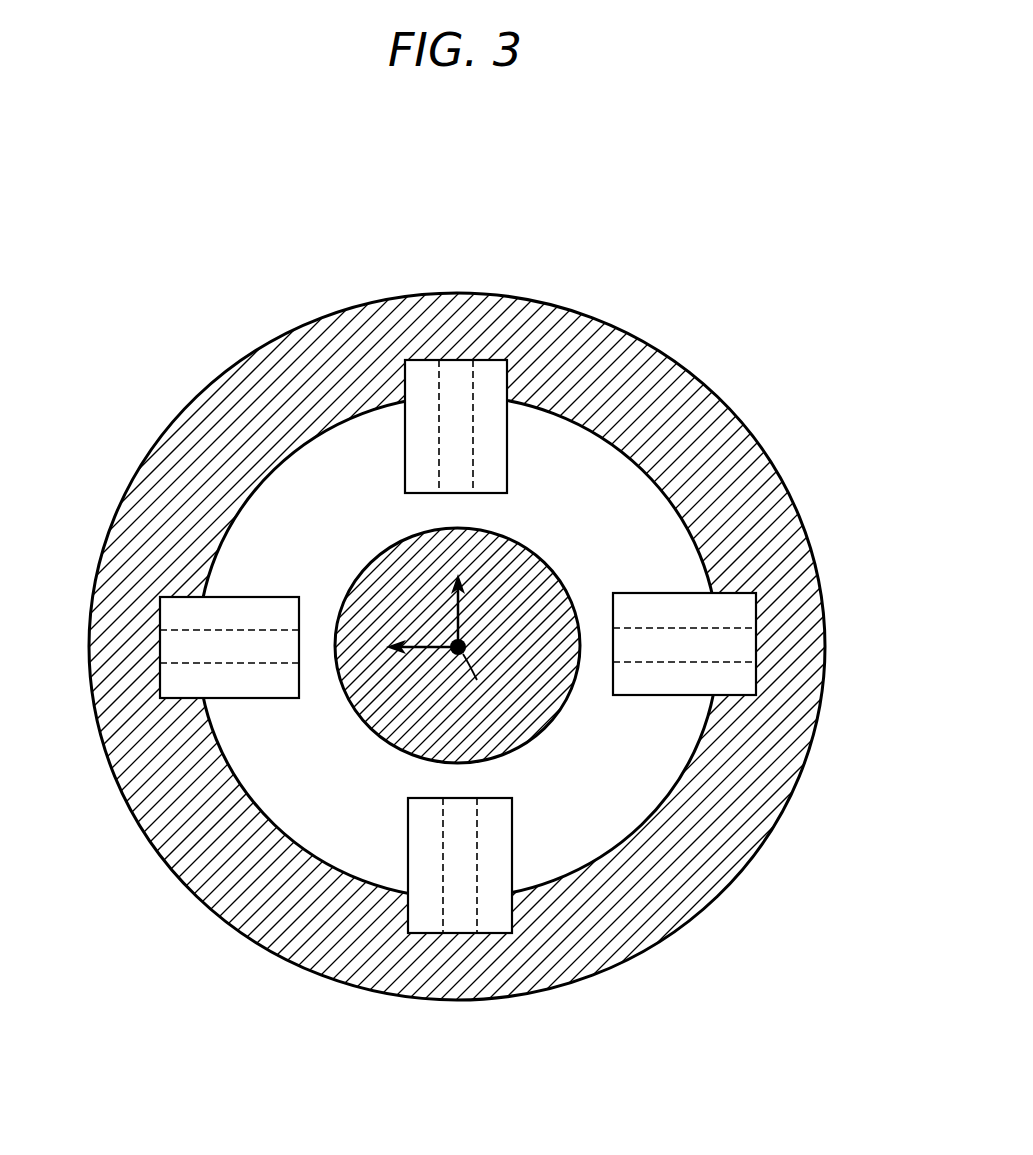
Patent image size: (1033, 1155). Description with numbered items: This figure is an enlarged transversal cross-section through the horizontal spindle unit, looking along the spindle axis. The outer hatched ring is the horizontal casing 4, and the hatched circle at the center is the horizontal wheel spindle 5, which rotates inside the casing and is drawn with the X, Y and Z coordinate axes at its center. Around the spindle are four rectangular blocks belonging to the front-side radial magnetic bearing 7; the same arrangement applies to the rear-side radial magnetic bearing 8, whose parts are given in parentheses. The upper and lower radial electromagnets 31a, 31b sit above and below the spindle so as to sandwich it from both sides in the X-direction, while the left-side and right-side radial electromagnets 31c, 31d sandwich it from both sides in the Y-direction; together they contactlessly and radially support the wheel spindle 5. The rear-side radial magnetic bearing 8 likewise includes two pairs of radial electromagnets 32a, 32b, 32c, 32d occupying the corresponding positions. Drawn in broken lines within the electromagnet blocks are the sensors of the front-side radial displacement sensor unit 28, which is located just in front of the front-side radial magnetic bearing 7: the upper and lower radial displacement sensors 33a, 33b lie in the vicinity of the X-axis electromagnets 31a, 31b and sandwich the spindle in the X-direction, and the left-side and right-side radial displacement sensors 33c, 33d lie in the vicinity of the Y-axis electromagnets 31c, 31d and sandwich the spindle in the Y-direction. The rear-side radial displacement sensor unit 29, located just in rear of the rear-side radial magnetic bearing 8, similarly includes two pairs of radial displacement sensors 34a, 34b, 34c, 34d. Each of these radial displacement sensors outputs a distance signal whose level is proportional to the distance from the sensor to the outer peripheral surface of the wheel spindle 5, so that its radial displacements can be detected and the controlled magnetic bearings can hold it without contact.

The casing 4 is at (741, 452).
The wheel spindle 5 is at (397, 560).
The front-side radial magnetic bearing 7 is at (520, 937).
The rear-side radial magnetic bearing 8 is at (563, 996).
The front-side radial displacement sensor unit 28 is at (433, 928).
The rear-side radial displacement sensor unit 29 is at (395, 1001).
The upper radial electromagnet 31a is at (416, 362).
The lower radial electromagnet 31b is at (495, 934).
The left-side radial electromagnet 31c is at (160, 690).
The right-side radial electromagnet 31d is at (756, 611).
The radial electromagnet 32a is at (485, 368).
The radial electromagnet 32b is at (426, 941).
The radial electromagnet 32c is at (156, 615).
The radial electromagnet 32d is at (765, 684).
The upper radial displacement sensor 33a is at (474, 446).
The lower radial displacement sensor 33b is at (442, 847).
The left-side radial displacement sensor 33c is at (250, 630).
The right-side radial displacement sensor 33d is at (667, 662).
The radial displacement sensor 34a is at (512, 429).
The radial displacement sensor 34b is at (400, 865).
The radial displacement sensor 34c is at (230, 603).
The radial displacement sensor 34d is at (684, 702).